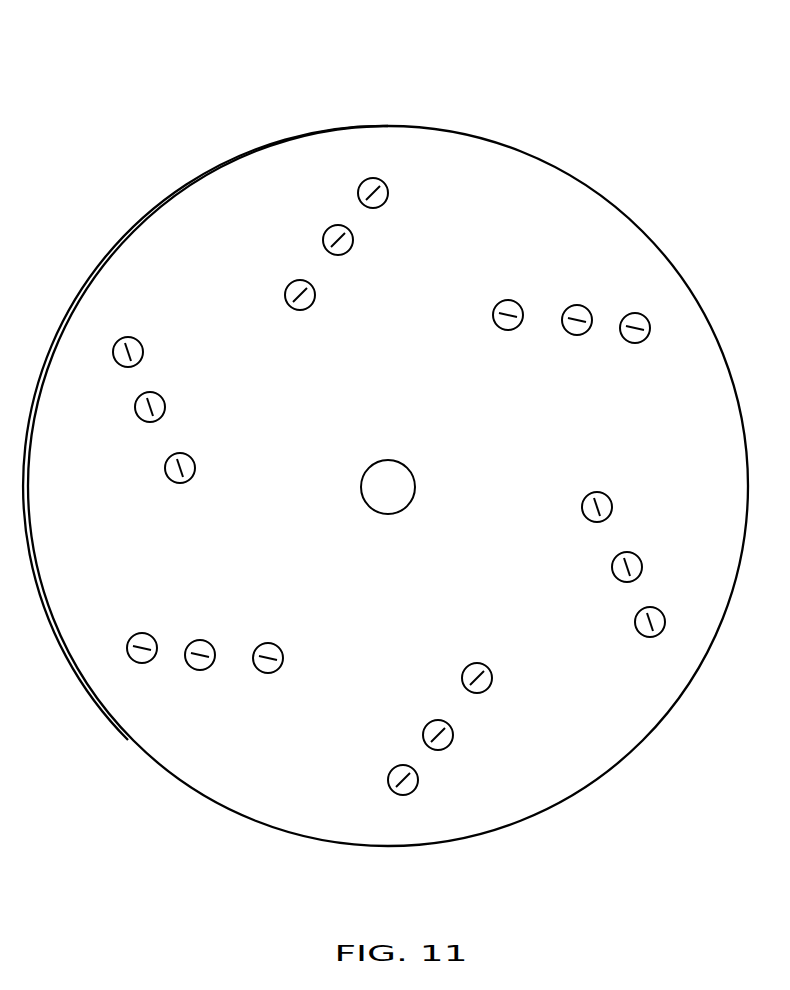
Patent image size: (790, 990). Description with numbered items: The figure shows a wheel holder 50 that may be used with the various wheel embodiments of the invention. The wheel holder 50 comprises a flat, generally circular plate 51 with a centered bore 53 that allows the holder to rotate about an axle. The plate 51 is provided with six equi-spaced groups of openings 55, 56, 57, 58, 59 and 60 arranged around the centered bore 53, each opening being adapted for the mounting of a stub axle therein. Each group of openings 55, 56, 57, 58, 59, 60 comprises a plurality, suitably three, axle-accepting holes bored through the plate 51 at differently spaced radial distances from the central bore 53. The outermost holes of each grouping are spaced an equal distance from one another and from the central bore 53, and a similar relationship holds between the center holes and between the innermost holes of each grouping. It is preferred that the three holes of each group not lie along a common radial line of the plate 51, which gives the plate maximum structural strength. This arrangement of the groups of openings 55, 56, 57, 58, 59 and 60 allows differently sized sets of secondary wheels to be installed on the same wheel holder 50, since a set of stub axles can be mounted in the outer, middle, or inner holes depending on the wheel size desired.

The wheel holder 50 is at (590, 92).
The plate 51 is at (273, 818).
The centered bore 53 is at (373, 493).
The group of openings 55 is at (290, 283).
The group of openings 56 is at (643, 315).
The group of openings 57 is at (664, 623).
The group of openings 58 is at (410, 793).
The group of openings 59 is at (263, 672).
The group of openings 60 is at (166, 472).